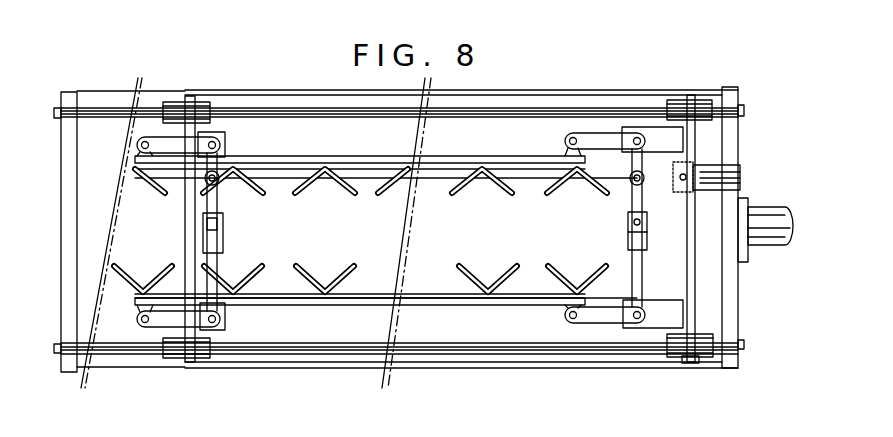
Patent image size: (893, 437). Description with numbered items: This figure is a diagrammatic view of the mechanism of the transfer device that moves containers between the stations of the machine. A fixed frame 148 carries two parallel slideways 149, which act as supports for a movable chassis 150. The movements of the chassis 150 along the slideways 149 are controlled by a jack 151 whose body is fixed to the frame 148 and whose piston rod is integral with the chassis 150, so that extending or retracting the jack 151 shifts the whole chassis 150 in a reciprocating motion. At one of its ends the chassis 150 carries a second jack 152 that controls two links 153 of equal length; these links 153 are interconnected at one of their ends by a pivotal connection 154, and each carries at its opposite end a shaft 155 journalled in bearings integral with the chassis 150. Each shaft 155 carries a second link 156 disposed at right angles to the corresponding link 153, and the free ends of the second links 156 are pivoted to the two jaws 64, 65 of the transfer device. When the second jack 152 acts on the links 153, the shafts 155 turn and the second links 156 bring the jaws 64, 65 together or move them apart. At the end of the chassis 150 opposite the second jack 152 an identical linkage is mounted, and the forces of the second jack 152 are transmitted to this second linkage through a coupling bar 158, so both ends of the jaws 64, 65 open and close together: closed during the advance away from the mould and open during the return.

The jaw 64 is at (372, 310).
The jaw 65 is at (365, 150).
The fixed frame 148 is at (728, 88).
The slideways 149 is at (626, 107).
The movable chassis 150 is at (700, 288).
The jack 151 is at (767, 244).
The second jack 152 is at (710, 172).
The links 153 is at (636, 270).
The pivotal connection 154 is at (648, 228).
The shaft 155 is at (646, 321).
The second link 156 is at (592, 144).
The coupling bar 158 is at (368, 181).